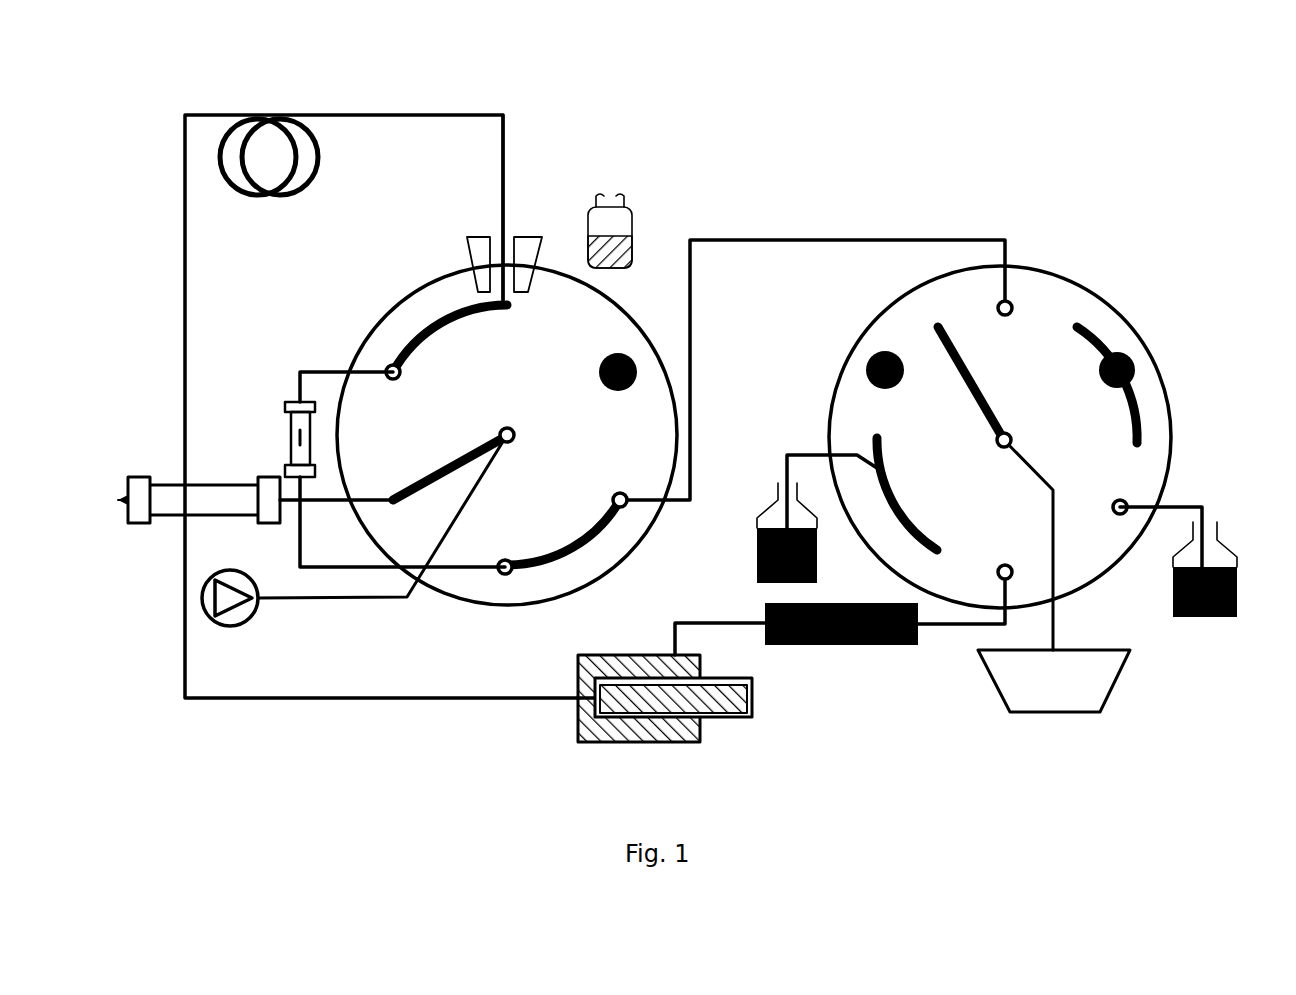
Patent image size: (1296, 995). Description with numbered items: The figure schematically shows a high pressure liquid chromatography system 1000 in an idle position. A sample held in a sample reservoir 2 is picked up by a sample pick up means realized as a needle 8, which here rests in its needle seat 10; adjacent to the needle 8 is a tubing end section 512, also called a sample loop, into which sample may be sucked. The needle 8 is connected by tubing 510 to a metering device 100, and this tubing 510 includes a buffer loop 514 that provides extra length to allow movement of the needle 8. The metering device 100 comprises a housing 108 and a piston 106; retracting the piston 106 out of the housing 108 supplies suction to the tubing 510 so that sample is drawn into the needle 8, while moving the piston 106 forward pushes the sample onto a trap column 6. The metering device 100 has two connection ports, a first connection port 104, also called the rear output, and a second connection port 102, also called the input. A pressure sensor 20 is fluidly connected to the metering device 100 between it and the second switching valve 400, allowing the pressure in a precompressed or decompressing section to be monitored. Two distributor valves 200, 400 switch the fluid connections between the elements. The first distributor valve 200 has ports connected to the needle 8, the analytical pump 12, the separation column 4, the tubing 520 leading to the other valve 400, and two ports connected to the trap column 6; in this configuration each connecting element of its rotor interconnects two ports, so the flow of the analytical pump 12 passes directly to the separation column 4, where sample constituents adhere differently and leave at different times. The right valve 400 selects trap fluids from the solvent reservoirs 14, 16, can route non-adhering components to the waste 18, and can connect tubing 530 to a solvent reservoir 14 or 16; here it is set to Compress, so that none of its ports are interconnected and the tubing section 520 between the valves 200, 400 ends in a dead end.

The liquid chromatography system 1000 is at (836, 84).
The tubing 510 is at (172, 382).
The buffer loop 514 is at (262, 216).
The tubing end section 512 is at (496, 195).
The needle seat 10 is at (521, 226).
The needle 8 is at (497, 295).
The sample reservoir 2 is at (645, 232).
The tubing 520 is at (878, 228).
The first distributor valve 200 is at (467, 435).
The second distributor valve 400 is at (1000, 458).
The trap column 6 is at (268, 405).
The separation column 4 is at (142, 532).
The analytical pump 12 is at (258, 616).
The solvent reservoir 14 is at (752, 560).
The solvent reservoir 16 is at (1250, 576).
The waste 18 is at (985, 690).
The pressure sensor 20 is at (824, 650).
The tubing 530 is at (936, 632).
The first connection port 104 is at (665, 650).
The second connection port 102 is at (575, 706).
The metering device 100 is at (644, 725).
The housing 108 is at (650, 744).
The piston 106 is at (740, 725).